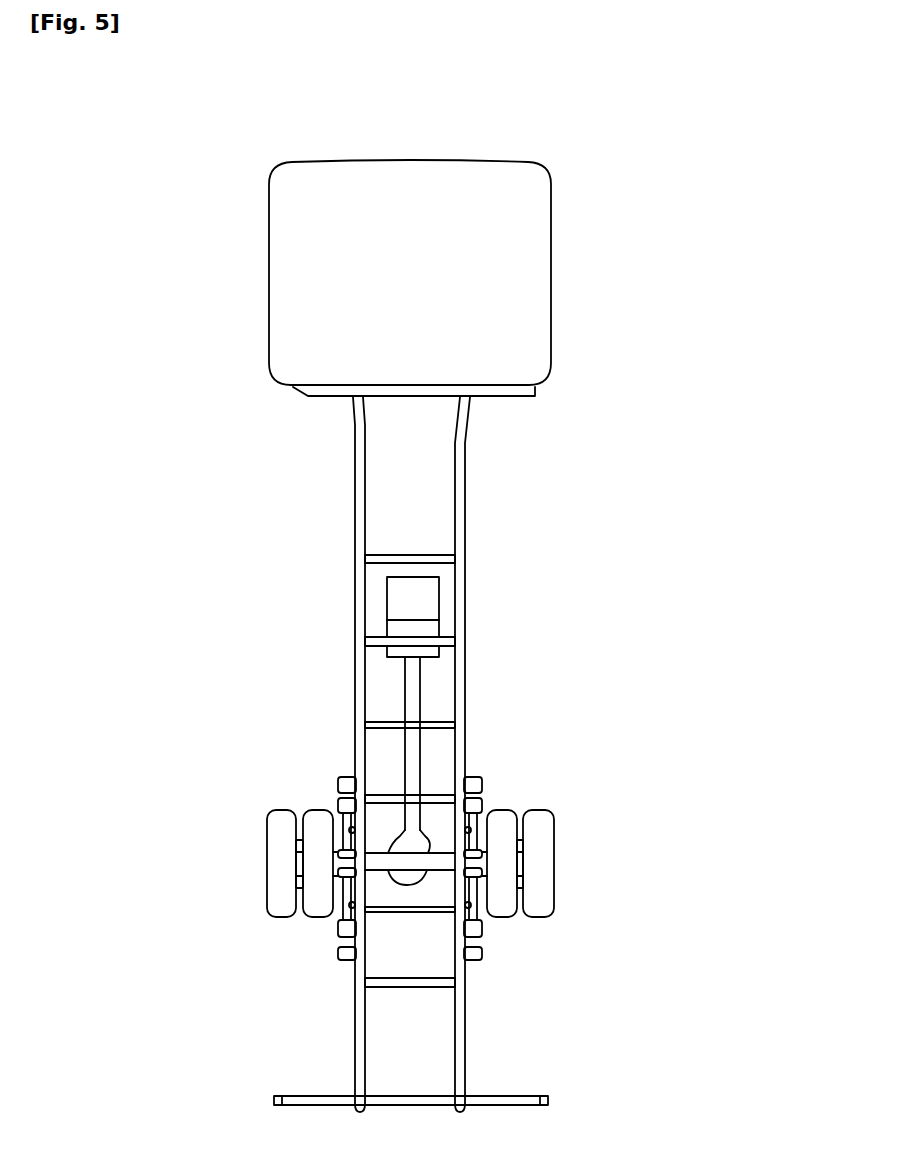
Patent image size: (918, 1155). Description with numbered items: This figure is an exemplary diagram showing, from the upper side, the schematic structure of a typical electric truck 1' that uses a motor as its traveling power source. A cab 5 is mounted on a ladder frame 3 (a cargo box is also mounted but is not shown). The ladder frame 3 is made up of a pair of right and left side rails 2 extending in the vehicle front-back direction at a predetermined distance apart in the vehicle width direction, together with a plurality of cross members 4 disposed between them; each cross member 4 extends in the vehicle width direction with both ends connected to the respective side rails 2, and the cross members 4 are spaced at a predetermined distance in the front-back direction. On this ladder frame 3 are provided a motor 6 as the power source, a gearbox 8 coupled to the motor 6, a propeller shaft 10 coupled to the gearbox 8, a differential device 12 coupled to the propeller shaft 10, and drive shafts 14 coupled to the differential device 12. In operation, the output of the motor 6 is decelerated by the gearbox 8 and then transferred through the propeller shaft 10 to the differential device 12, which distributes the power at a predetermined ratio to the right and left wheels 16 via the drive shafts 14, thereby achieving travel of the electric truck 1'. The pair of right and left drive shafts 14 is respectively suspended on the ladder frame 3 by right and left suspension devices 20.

The electric truck 1' is at (441, 595).
The side rails 2 is at (354, 511).
The ladder frame 3 is at (501, 480).
The cross members 4 is at (410, 553).
The cab 5 is at (552, 280).
The motor 6 is at (440, 598).
The gearbox 8 is at (440, 633).
The propeller shaft 10 is at (421, 705).
The differential device 12 is at (413, 886).
The drive shafts 14 is at (346, 898).
The wheels 16 is at (265, 860).
The suspension devices 20 is at (336, 793).